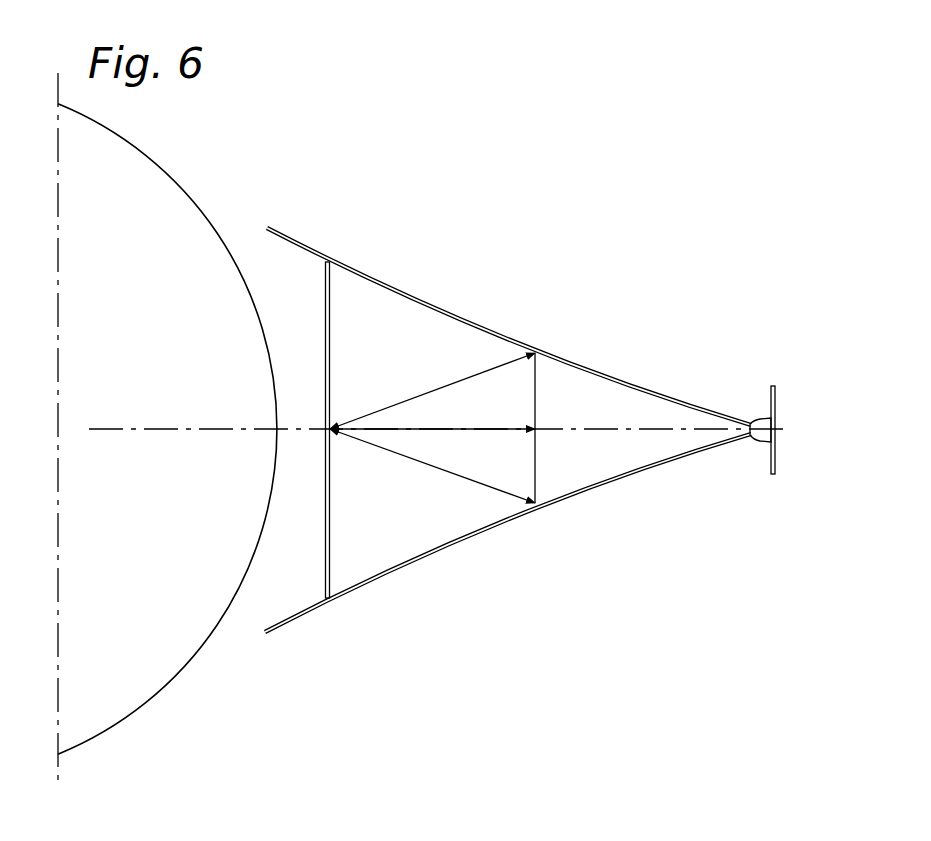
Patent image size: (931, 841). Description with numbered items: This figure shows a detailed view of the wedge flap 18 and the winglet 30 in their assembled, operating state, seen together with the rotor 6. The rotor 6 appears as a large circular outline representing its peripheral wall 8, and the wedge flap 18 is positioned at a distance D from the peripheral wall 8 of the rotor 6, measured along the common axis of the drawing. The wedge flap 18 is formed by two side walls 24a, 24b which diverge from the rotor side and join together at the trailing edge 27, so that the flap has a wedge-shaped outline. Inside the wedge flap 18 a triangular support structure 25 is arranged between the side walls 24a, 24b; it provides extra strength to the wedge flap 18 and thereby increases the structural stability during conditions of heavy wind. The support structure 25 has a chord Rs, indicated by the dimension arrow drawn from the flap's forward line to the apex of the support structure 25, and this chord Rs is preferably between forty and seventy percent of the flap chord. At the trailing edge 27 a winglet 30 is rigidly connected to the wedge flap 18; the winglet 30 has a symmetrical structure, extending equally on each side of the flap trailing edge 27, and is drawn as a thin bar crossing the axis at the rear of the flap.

The rotor 6 is at (167, 221).
The peripheral wall 8 is at (167, 429).
The wedge flap 18 is at (545, 411).
The side wall 24a is at (449, 314).
The side wall 24b is at (468, 537).
The triangular support structure 25 is at (538, 392).
The trailing edge 27 is at (750, 420).
The winglet 30 is at (780, 424).
The distance D is at (277, 288).
The chord Rs is at (432, 428).